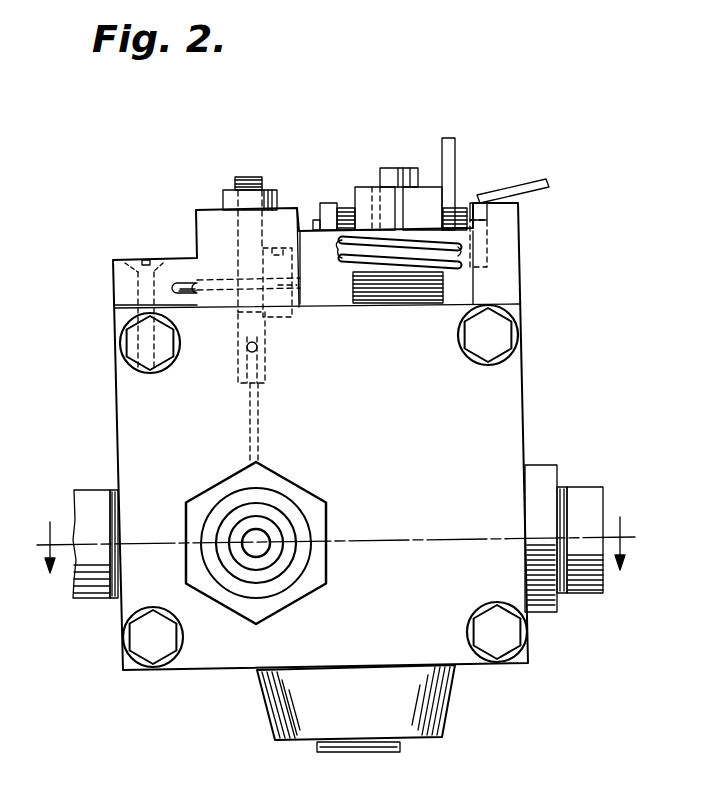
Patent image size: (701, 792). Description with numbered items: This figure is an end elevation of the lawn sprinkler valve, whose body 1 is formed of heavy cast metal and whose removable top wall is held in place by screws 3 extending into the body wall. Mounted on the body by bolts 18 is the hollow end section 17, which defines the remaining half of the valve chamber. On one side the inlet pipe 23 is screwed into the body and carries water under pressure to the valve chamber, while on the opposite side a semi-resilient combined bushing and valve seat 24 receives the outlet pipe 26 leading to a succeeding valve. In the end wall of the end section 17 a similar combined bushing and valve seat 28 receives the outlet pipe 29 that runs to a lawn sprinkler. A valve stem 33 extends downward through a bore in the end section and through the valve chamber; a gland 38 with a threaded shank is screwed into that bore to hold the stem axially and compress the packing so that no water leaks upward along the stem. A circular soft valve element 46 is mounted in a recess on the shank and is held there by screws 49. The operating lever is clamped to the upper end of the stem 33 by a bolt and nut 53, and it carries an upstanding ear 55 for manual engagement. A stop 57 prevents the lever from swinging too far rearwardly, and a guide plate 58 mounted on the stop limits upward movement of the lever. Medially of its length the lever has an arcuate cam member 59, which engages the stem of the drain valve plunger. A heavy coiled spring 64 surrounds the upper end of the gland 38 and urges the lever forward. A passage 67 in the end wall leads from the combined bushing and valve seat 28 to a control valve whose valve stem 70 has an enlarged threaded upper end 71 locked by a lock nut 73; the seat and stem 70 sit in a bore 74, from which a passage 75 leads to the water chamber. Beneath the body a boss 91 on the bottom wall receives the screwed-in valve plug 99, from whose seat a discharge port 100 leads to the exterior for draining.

The body 1 is at (526, 440).
The screws 3 is at (297, 227).
The hollow end section 17 is at (490, 425).
The bolts 18 is at (510, 342).
The inlet pipe 23 is at (80, 497).
The combined bushing and valve seat 24 is at (545, 480).
The outlet pipe 26 is at (590, 510).
The combined bushing and valve seat 28 is at (237, 605).
The outlet pipe 29 is at (330, 535).
The valve stem 33 is at (395, 168).
The gland 38 is at (355, 307).
The valve element 46 is at (270, 523).
The screws 49 is at (270, 532).
The nut 53 is at (343, 195).
The ear 55 is at (450, 158).
The stop 57 is at (515, 277).
The guide plate 58 is at (520, 210).
The cam member 59 is at (540, 183).
The coiled spring 64 is at (455, 272).
The passage 67 is at (258, 427).
The valve stem 70 is at (245, 330).
The enlarged threaded upper end 71 is at (245, 177).
The lock nut 73 is at (277, 195).
The bore 74 is at (248, 368).
The passage 75 is at (270, 350).
The boss 91 is at (445, 725).
The valve plug 99 is at (395, 752).
The discharge port 100 is at (365, 752).